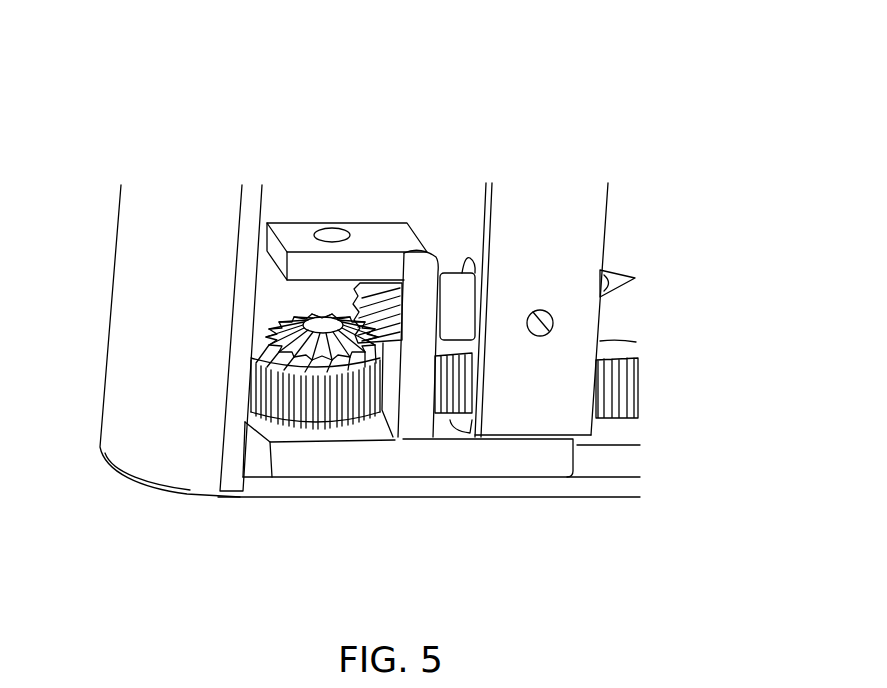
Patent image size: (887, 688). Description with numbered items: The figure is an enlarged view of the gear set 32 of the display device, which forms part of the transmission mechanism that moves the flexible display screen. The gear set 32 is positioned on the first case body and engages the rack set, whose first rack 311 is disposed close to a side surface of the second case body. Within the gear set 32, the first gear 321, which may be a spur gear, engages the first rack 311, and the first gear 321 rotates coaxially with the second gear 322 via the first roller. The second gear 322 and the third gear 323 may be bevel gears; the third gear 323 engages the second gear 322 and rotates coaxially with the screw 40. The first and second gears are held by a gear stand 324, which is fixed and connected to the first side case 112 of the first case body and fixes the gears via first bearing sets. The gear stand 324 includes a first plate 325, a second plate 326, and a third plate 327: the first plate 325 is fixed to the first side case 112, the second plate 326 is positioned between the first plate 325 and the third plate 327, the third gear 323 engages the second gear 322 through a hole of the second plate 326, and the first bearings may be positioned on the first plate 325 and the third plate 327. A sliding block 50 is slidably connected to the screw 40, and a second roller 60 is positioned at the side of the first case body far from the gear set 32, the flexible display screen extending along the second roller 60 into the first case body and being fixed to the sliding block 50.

The gear set 32 is at (228, 88).
The screw 40 is at (614, 308).
The sliding block 50 is at (583, 208).
The second roller 60 is at (178, 372).
The first side case 112 is at (613, 487).
The first rack 311 is at (618, 392).
The first gear 321 is at (323, 420).
The second gear 322 is at (293, 327).
The third gear 323 is at (393, 303).
The gear stand 324 is at (390, 462).
The first plate 325 is at (545, 463).
The second plate 326 is at (415, 388).
The third plate 327 is at (362, 243).